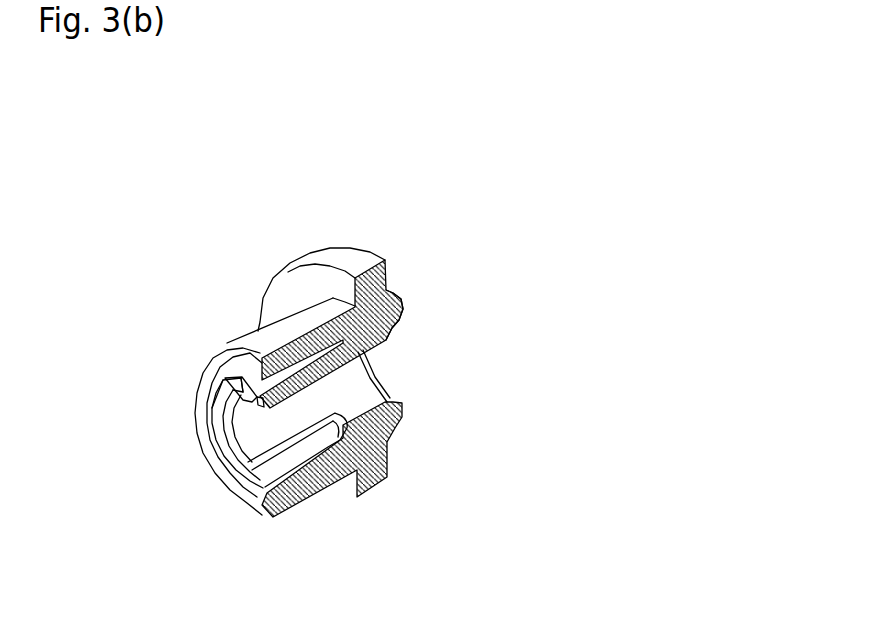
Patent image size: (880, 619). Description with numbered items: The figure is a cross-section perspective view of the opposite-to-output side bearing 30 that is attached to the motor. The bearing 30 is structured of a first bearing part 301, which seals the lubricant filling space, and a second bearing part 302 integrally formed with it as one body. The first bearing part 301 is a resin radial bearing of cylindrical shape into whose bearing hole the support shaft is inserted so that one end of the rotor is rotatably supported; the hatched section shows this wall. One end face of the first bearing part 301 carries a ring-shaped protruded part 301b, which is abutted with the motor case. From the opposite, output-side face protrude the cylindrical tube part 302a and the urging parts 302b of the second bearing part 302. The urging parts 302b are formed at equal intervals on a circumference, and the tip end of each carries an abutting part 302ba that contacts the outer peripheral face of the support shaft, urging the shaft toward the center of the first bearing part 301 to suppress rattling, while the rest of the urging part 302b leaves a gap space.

The opposite-to-output side bearing 30 is at (286, 339).
The first bearing part 301 is at (367, 335).
The protruded part 301b is at (431, 297).
The second bearing part 302 is at (286, 409).
The cylindrical tube part 302a is at (158, 431).
The urging parts 302b is at (208, 470).
The abutting part 302ba is at (371, 455).